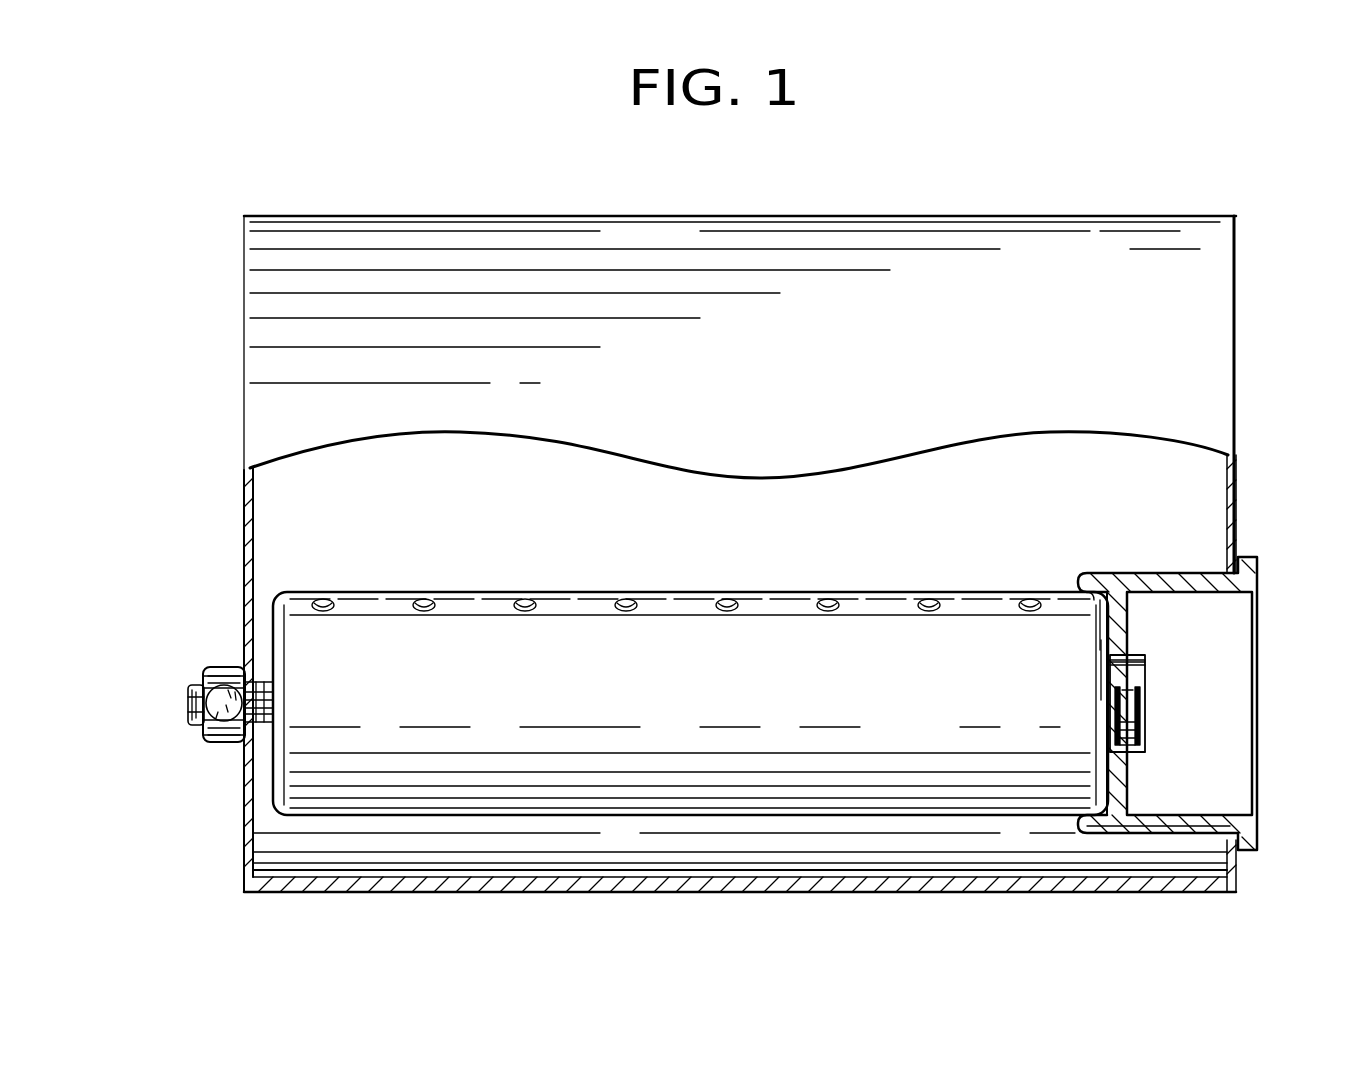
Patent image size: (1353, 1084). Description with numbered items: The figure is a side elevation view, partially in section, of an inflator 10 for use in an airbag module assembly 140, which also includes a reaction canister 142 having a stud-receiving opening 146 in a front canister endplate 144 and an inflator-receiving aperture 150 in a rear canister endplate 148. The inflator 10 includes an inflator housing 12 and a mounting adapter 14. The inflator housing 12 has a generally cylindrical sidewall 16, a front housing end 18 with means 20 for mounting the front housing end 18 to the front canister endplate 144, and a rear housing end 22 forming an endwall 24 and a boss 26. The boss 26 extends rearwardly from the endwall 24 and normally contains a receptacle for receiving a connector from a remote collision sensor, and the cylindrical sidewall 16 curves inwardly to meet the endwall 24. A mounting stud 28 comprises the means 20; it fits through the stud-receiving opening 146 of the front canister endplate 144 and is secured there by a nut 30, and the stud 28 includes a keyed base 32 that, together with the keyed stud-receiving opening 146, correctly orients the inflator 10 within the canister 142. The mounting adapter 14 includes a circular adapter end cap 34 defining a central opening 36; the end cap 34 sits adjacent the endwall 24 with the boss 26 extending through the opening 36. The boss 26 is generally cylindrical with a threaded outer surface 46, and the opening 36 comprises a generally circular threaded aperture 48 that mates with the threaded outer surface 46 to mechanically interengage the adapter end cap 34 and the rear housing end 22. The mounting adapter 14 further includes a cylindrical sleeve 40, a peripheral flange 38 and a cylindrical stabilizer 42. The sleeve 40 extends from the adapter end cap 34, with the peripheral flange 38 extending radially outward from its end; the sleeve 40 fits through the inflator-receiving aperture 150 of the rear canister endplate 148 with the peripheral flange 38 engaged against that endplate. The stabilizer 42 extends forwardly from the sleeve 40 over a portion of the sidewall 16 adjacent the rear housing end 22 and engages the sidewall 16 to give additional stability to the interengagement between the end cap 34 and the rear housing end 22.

The inflator 10 is at (532, 817).
The inflator housing 12 is at (504, 590).
The mounting adapter 14 is at (1180, 584).
The cylindrical sidewall 16 is at (678, 592).
The front housing end 18 is at (272, 618).
The means for mounting 20 is at (205, 688).
The rear housing end 22 is at (1110, 625).
The endwall 24 is at (1104, 644).
The boss 26 is at (1142, 683).
The mounting stud 28 is at (192, 712).
The nut 30 is at (236, 744).
The keyed base 32 is at (226, 667).
The adapter end cap 34 is at (1128, 802).
The central opening 36 is at (1112, 745).
The peripheral flange 38 is at (1244, 853).
The cylindrical sleeve 40 is at (1170, 835).
The cylindrical stabilizer 42 is at (1090, 832).
The threaded outer surface 46 is at (1143, 720).
The threaded aperture 48 is at (1110, 664).
The airbag module assembly 140 is at (1033, 193).
The reaction canister 142 is at (1240, 348).
The front canister endplate 144 is at (245, 524).
The stud-receiving opening 146 is at (266, 711).
The rear canister endplate 148 is at (1234, 516).
The inflator-receiving aperture 150 is at (1243, 870).